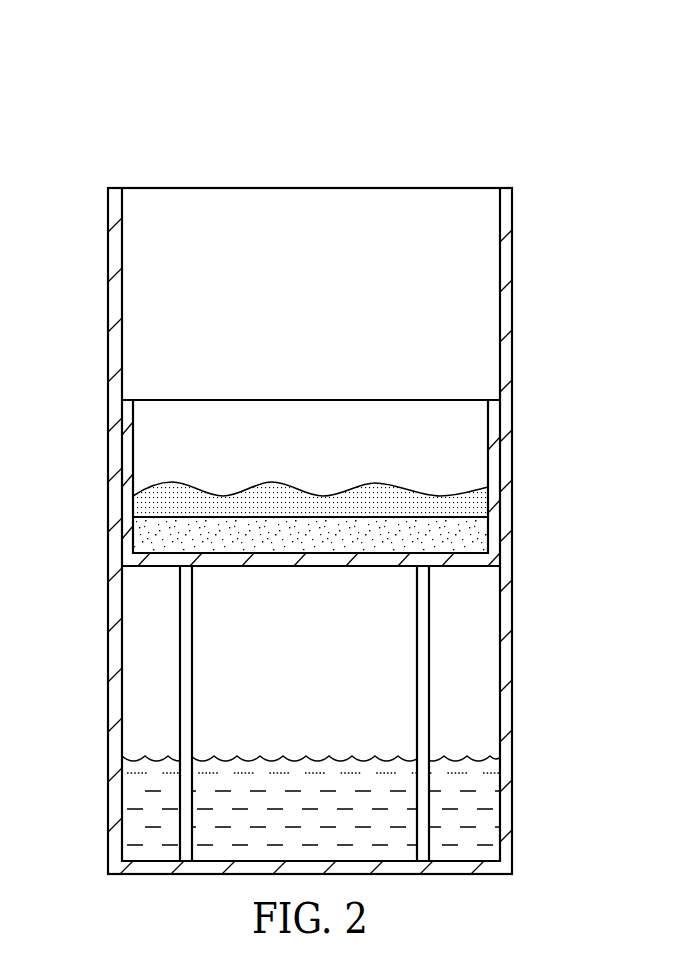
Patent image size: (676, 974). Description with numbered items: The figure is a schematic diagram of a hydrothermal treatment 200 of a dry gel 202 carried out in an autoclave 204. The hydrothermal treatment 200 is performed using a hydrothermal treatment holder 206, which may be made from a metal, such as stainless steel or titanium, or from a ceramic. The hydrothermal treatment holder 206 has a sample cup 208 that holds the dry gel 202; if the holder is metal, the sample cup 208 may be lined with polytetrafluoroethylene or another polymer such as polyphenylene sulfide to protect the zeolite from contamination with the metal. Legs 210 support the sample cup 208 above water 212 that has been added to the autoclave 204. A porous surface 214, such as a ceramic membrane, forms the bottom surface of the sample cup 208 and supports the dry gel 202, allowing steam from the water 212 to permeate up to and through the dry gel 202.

The hydrothermal treatment 200 is at (176, 83).
The dry gel 202 is at (323, 503).
The autoclave 204 is at (108, 297).
The hydrothermal treatment holder 206 is at (308, 400).
The sample cup 208 is at (521, 403).
The legs 210 is at (192, 637).
The water 212 is at (322, 760).
The porous surface 214 is at (240, 516).